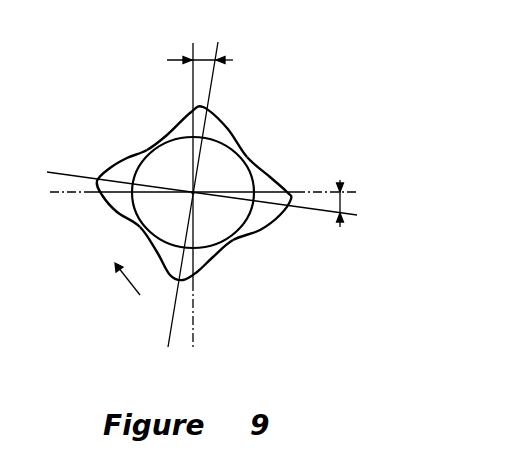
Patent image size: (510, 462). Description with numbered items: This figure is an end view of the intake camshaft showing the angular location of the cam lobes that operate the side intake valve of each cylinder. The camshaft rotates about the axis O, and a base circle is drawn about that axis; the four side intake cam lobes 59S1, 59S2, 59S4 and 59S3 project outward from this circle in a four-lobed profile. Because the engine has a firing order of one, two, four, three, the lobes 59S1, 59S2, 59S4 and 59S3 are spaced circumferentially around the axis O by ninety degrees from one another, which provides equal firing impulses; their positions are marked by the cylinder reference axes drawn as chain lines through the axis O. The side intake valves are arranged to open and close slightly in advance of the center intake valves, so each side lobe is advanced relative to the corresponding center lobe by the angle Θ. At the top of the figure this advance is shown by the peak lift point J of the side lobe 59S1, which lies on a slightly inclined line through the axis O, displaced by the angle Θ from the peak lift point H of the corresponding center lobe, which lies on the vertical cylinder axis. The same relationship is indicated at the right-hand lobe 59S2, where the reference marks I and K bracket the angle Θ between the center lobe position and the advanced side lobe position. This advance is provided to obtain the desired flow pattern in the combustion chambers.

The side intake cam lobe for cylinder #1 59S1 is at (227, 123).
The side intake cam lobe for cylinder #2 59S2 is at (254, 232).
The side intake cam lobe for cylinder #3 59S3 is at (128, 156).
The side intake cam lobe for cylinder #4 59S4 is at (166, 262).
The axis of rotation O is at (190, 194).
The peak lift point of center intake cam lobes H is at (190, 53).
The peak lift point of side intake cam lobes J is at (220, 50).
The angular offset reference I is at (323, 190).
The angular offset reference K is at (335, 208).